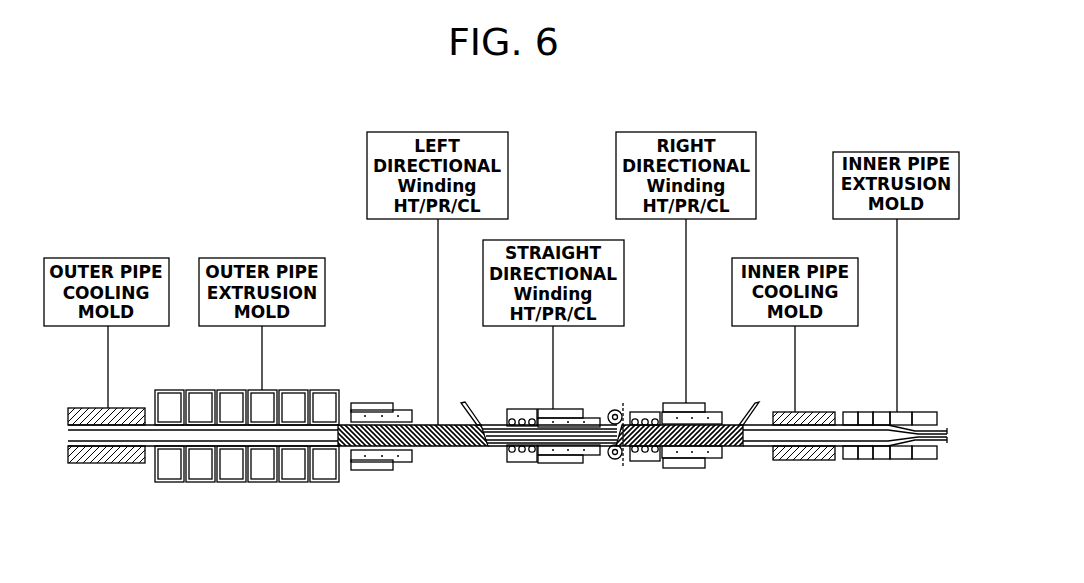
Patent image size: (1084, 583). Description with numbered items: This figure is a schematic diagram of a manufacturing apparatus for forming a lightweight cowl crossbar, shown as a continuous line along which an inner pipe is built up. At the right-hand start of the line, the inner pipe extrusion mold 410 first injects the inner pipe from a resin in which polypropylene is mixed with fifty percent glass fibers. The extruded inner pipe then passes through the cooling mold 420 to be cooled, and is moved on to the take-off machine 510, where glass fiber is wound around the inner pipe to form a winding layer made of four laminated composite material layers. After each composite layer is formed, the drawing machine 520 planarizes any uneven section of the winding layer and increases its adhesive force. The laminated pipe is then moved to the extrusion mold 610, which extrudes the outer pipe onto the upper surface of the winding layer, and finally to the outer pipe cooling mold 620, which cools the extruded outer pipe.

The inner pipe extrusion mold 410 is at (917, 460).
The cooling mold 420 is at (800, 460).
The take-off machine 510 is at (536, 447).
The drawing machine 520 is at (523, 408).
The extrusion mold 610 is at (233, 483).
The outer pipe cooling mold 620 is at (107, 463).